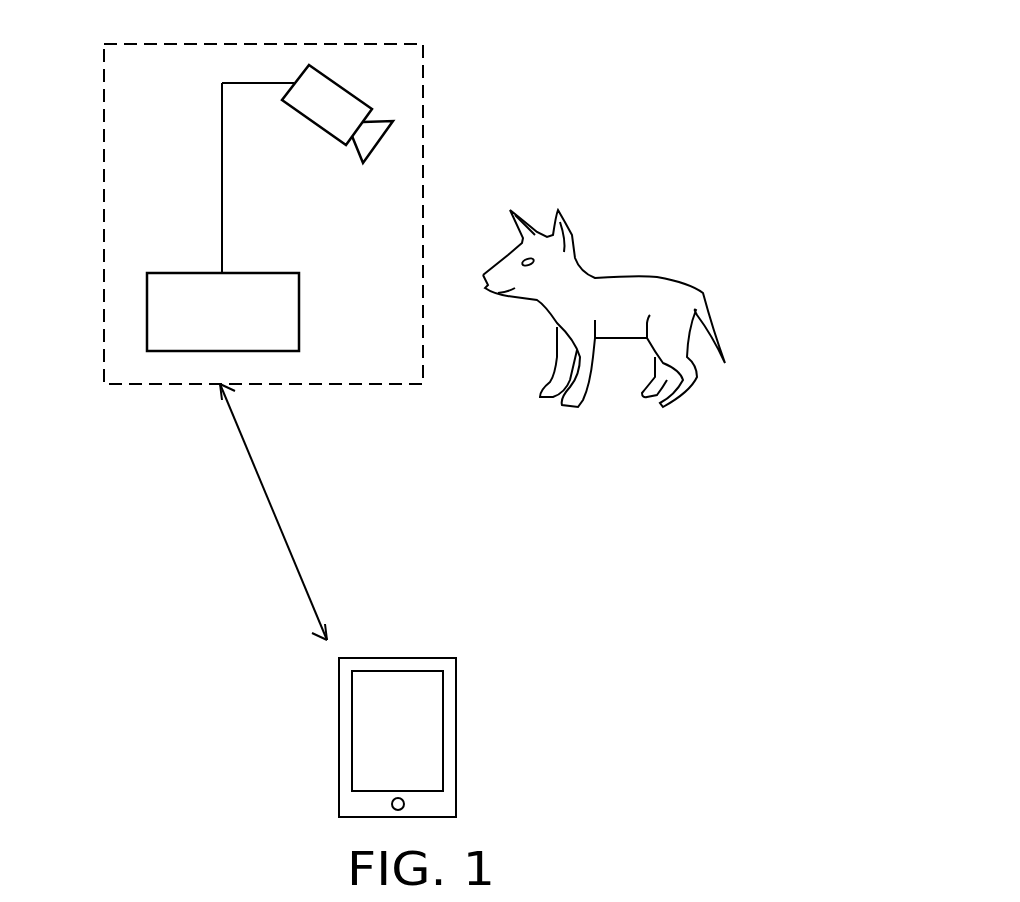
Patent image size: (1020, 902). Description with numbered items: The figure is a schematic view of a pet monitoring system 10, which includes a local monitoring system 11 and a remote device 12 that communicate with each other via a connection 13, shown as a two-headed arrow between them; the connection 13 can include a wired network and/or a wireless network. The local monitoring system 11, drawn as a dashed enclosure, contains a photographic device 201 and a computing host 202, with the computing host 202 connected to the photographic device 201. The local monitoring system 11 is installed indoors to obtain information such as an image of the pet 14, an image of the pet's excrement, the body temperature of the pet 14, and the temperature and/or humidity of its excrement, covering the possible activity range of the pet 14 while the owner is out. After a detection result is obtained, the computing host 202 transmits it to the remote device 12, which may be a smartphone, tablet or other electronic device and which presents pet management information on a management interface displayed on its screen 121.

The pet monitoring system 10 is at (665, 834).
The local monitoring system 11 is at (347, 43).
The photographic device 201 is at (342, 82).
The computing host 202 is at (299, 312).
The pet 14 is at (655, 227).
The connection 13 is at (268, 502).
The remote device 12 is at (394, 737).
The screen 121 is at (352, 732).